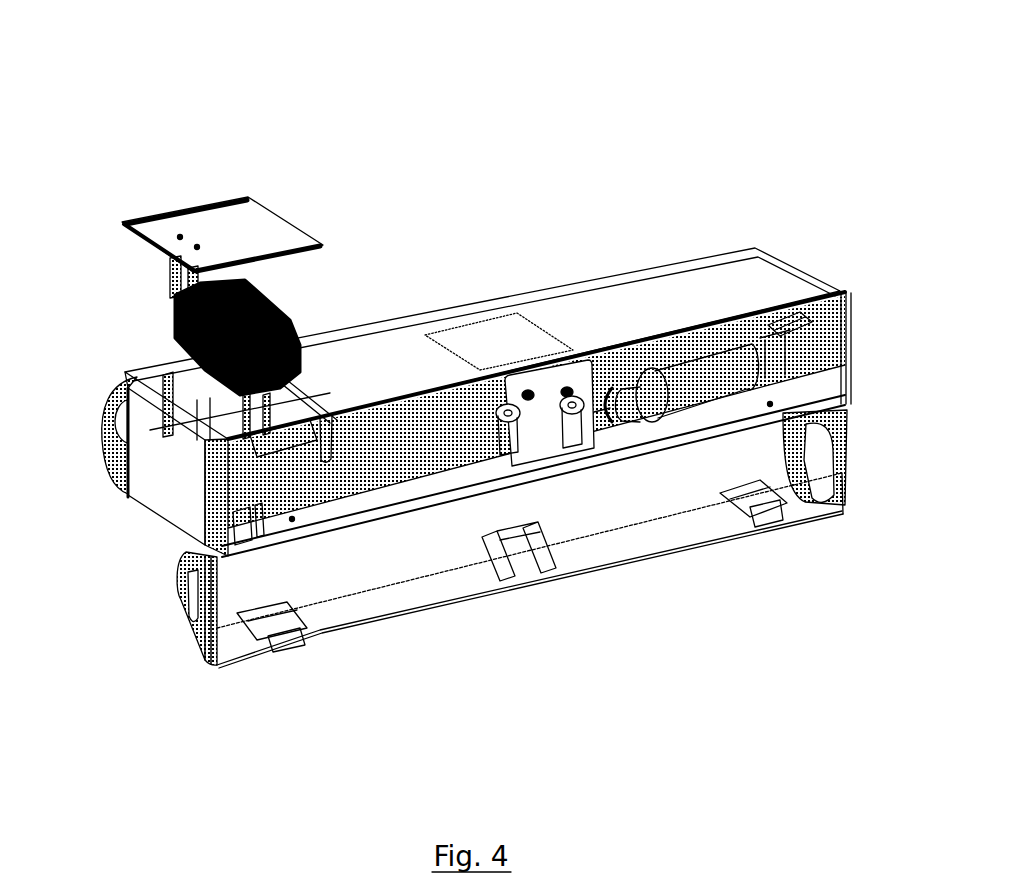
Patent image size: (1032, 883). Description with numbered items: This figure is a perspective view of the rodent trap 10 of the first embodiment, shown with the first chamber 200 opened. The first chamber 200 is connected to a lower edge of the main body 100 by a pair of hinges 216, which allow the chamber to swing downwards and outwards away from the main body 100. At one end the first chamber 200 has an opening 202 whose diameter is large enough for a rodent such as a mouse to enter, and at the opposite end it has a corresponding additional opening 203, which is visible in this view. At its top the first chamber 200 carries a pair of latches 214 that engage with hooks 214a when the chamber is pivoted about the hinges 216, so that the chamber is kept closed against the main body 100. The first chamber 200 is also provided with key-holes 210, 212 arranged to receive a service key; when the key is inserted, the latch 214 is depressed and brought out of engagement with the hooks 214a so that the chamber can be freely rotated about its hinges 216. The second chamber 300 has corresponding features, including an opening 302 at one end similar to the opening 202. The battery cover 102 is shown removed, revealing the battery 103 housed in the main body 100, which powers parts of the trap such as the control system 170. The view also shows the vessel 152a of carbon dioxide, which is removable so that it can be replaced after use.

The rodent trap 10 is at (430, 140).
The main body 100 is at (640, 300).
The battery cover 102 is at (222, 223).
The battery 103 is at (290, 318).
The vessel of carbon dioxide 152a is at (738, 386).
The control system 170 is at (488, 330).
The first chamber 200 is at (663, 512).
The opening 202 is at (195, 580).
The additional opening 203 is at (807, 440).
The key-hole 210 is at (282, 648).
The key-hole 212 is at (767, 523).
The latch 214 is at (290, 617).
The hook 214a is at (795, 315).
The hinge 216 is at (770, 404).
The second chamber 300 is at (110, 393).
The opening 302 is at (120, 437).